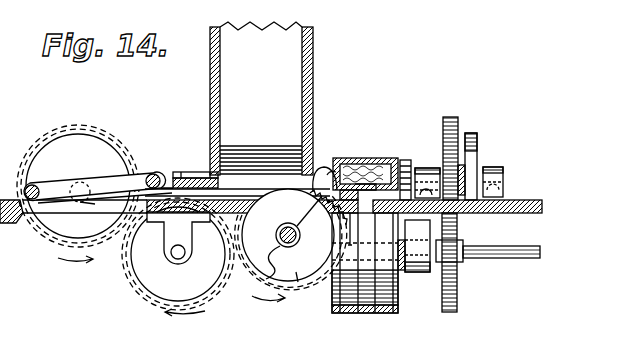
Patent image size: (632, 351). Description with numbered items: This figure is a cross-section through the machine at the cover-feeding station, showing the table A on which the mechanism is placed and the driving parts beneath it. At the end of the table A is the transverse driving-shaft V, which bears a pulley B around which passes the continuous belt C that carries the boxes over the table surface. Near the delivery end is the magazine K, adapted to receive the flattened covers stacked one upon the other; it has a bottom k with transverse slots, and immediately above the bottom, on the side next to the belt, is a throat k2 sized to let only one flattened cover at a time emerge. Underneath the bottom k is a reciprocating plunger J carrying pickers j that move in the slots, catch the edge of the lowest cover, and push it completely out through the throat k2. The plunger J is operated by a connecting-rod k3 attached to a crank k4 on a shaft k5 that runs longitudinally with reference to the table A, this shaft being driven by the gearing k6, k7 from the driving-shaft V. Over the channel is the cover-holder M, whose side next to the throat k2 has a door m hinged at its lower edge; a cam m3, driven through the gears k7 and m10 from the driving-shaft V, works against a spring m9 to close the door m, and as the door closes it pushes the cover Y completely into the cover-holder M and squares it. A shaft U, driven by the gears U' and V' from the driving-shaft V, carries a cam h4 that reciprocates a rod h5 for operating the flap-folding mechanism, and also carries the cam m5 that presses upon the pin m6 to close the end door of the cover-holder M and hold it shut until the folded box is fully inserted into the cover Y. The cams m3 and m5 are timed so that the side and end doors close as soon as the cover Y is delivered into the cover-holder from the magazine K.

The table A is at (542, 207).
The pulley B is at (398, 305).
The continuous belt C is at (404, 158).
The reciprocating plunger J is at (183, 172).
The pickers j is at (204, 172).
The magazine K is at (261, 98).
The bottom k is at (316, 168).
The throat k2 is at (296, 158).
The connecting-rod k3 is at (130, 176).
The crank k4 is at (72, 200).
The shaft k5 is at (90, 198).
The gear k6 is at (78, 194).
The gear k7 is at (178, 257).
The cover-holder M is at (368, 158).
The door m is at (334, 157).
The cam m3 is at (291, 245).
The cam m5 is at (430, 164).
The pin m6 is at (424, 168).
The spring m9 is at (340, 224).
The gear m10 is at (298, 282).
The shaft U is at (507, 182).
The gear U' is at (460, 145).
The driving-shaft V is at (510, 253).
The gear V' is at (460, 262).
The cover Y is at (386, 158).
The cam h4 is at (477, 136).
The rod h5 is at (468, 176).